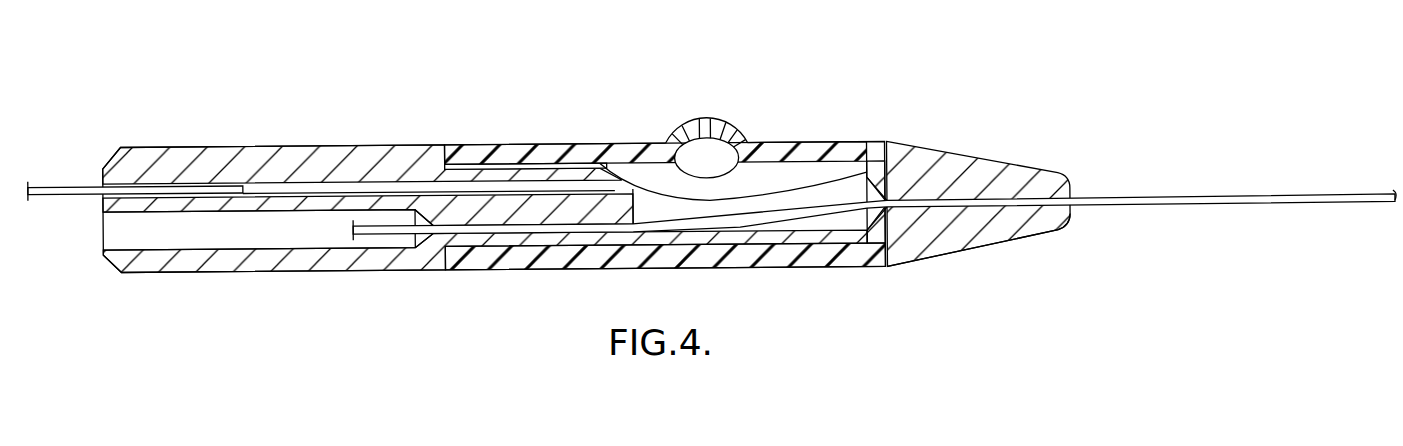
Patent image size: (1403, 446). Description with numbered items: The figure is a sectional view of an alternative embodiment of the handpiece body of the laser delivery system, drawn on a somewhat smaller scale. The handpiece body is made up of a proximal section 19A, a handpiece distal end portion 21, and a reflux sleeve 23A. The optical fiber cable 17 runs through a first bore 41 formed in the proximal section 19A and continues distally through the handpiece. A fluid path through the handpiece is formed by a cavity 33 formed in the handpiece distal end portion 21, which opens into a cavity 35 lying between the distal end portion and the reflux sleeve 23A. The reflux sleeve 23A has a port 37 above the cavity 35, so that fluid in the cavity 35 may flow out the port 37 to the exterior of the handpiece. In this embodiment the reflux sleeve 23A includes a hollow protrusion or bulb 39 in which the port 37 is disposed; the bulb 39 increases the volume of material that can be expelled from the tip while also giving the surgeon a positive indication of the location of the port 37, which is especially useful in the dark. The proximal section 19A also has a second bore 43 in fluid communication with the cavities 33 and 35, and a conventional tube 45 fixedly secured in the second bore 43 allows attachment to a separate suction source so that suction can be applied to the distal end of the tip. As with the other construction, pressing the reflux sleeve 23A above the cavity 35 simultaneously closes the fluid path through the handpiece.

The optical fiber cable 17 is at (1137, 207).
The proximal section 19A is at (253, 146).
The handpiece distal end portion 21 is at (1003, 243).
The reflux sleeve 23A is at (858, 141).
The cavity 33 is at (837, 194).
The cavity 35 is at (672, 187).
The port 37 is at (710, 124).
The bulb 39 is at (683, 130).
The first bore 41 is at (172, 239).
The second bore 43 is at (342, 181).
The tube 45 is at (68, 186).